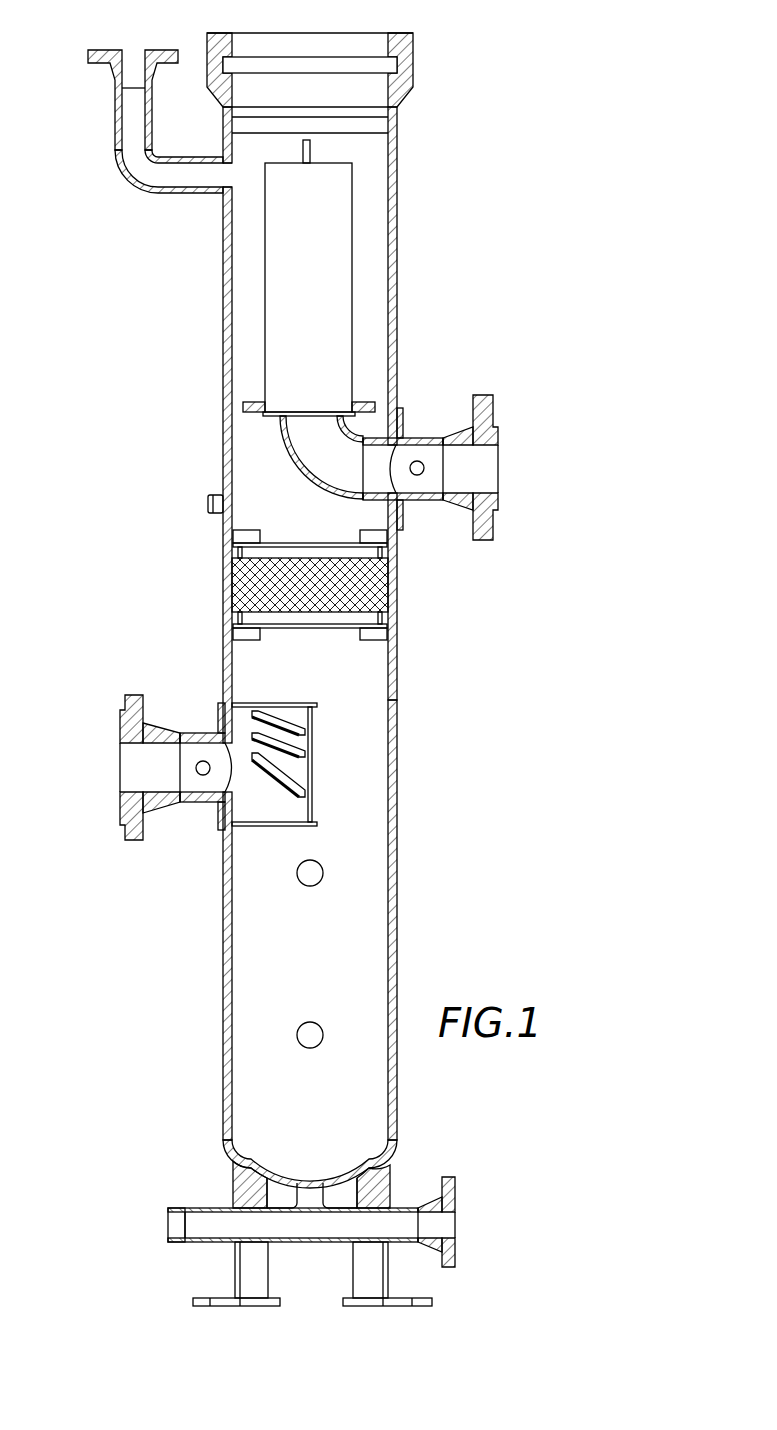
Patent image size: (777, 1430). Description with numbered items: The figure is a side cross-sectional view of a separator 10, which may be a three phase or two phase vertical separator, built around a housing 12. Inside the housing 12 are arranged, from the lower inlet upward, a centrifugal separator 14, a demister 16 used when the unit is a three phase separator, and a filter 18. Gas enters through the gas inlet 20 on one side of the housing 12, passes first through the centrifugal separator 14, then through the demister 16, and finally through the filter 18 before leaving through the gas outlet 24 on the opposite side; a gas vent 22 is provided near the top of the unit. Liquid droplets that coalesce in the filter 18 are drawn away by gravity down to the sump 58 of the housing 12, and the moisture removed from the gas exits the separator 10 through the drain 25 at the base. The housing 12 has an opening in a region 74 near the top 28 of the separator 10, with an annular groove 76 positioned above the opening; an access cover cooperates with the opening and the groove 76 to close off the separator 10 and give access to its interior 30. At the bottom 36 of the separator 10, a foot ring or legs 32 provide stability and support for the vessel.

The separator 10 is at (548, 80).
The housing 12 is at (400, 660).
The centrifugal separator 14 is at (256, 818).
The demister 16 is at (223, 570).
The filter 18 is at (263, 267).
The gas inlet 20 is at (117, 762).
The gas vent 22 is at (117, 43).
The gas outlet 24 is at (500, 495).
The drain 25 is at (460, 1193).
The top 28 is at (415, 97).
The interior 30 is at (375, 160).
The foot ring or legs 32 is at (202, 1295).
The bottom 36 is at (400, 890).
The sump 58 is at (253, 975).
The region 74 is at (310, 70).
The annular groove 76 is at (400, 33).